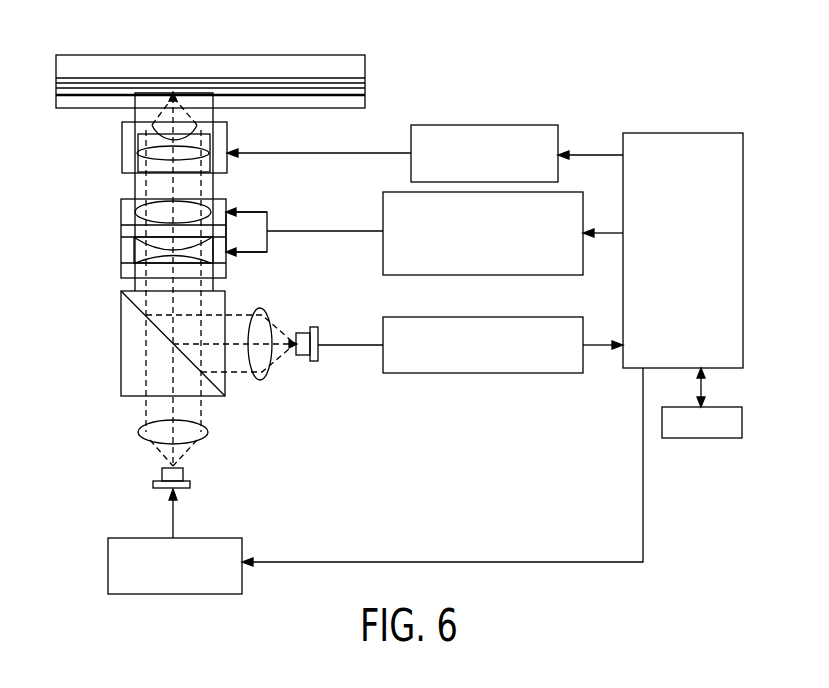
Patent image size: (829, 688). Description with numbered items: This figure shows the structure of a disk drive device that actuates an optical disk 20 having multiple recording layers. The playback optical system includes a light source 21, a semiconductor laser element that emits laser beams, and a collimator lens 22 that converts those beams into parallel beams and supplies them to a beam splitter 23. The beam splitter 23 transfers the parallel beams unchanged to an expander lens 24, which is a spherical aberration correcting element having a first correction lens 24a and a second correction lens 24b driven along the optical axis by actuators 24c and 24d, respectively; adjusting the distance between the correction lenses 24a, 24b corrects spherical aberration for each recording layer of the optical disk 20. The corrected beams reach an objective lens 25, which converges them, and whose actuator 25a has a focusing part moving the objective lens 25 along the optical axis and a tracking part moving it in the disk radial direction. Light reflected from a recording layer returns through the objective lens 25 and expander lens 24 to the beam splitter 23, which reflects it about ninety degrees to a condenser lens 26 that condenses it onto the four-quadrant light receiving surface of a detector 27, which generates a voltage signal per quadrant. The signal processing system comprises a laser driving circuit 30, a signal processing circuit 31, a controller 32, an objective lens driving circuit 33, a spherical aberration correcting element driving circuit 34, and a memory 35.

The optical disk 20 is at (210, 55).
The light source 21 is at (155, 483).
The collimator lens 22 is at (142, 432).
The beam splitter 23 is at (121, 346).
The expander lens 24 is at (238, 201).
The first correction lens 24a is at (145, 258).
The second correction lens 24b is at (138, 200).
The actuator 24c is at (121, 250).
The actuator 24d is at (121, 214).
The objective lens 25 is at (142, 150).
The actuator 25a is at (228, 137).
The condenser lens 26 is at (258, 381).
The detector 27 is at (312, 363).
The laser driving circuit 30 is at (108, 566).
The signal processing circuit 31 is at (383, 328).
The controller 32 is at (685, 133).
The objective lens driving circuit 33 is at (488, 125).
The spherical aberration correcting element driving circuit 34 is at (383, 213).
The memory 35 is at (703, 440).